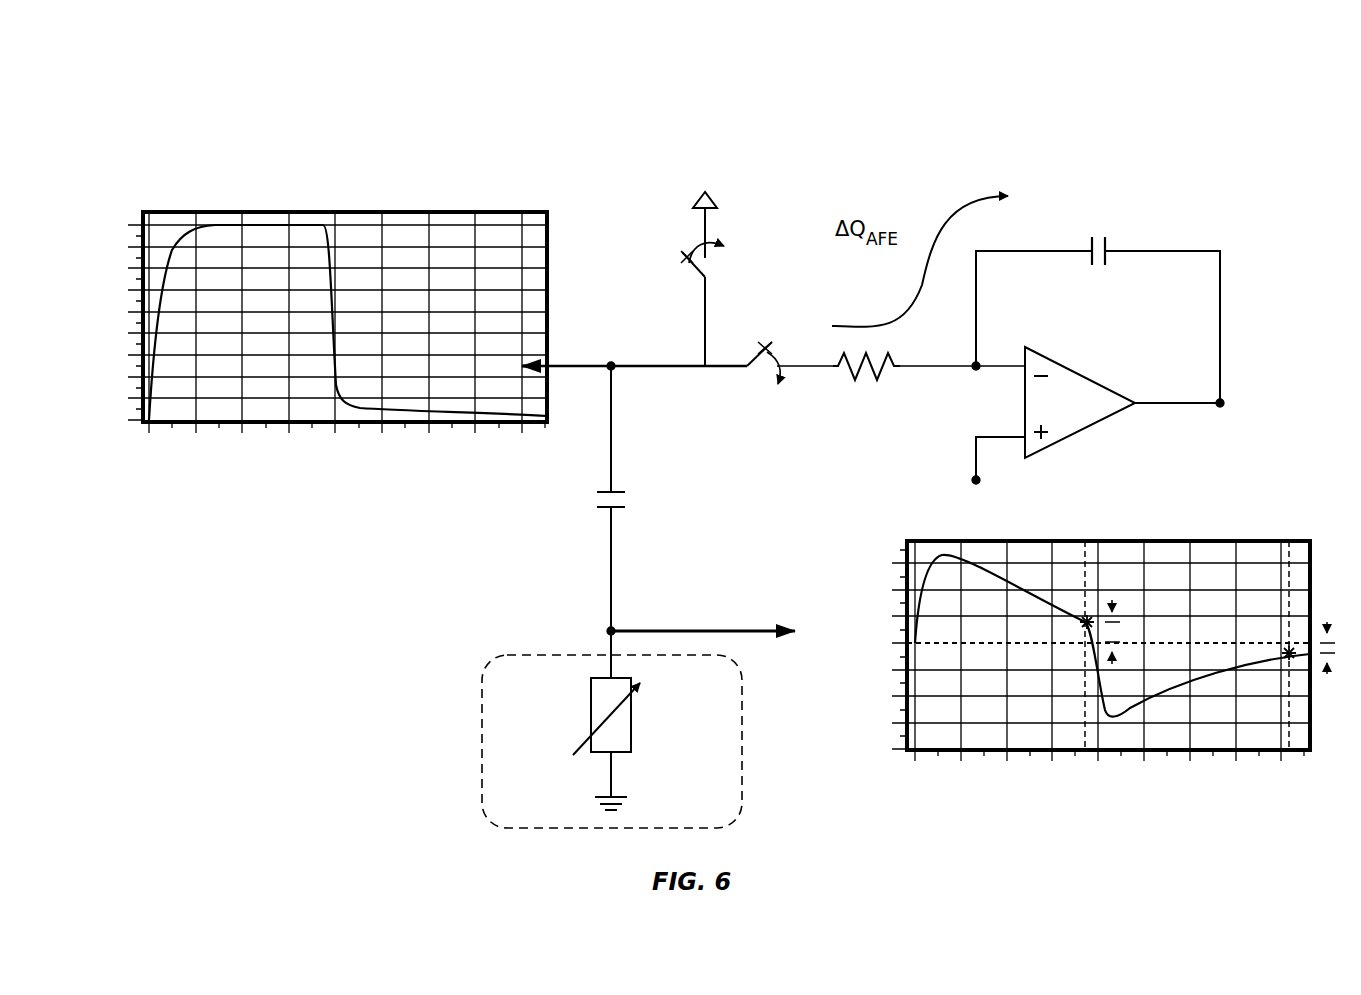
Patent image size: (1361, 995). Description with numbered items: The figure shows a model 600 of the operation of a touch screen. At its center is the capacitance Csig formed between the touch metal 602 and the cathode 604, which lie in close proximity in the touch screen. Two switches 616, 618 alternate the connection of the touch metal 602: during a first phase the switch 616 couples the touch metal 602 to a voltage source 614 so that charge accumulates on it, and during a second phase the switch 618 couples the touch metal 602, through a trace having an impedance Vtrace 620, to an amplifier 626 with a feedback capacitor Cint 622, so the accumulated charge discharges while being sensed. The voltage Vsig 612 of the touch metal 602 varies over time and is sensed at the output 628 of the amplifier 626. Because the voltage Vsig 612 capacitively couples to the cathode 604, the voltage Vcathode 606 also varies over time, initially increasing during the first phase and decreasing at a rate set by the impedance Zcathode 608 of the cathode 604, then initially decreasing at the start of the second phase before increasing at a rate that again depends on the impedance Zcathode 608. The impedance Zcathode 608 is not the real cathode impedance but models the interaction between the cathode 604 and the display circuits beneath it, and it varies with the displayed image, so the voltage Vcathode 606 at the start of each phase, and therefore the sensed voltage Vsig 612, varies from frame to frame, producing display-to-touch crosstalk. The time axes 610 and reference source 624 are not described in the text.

The model 600 is at (272, 80).
The touch metal 602 is at (616, 487).
The cathode 604 is at (615, 512).
The voltage Vcathode 606 is at (685, 605).
The impedance Zcathode 608 is at (540, 735).
The time axis 610 is at (300, 478).
The voltage Vsig 612 is at (615, 332).
The voltage source 614 is at (705, 165).
The switch 616 is at (707, 268).
The switch 618 is at (762, 364).
The trace impedance Vtrace 620 is at (873, 430).
The feedback capacitor Cint 622 is at (1130, 221).
The reference voltage V_REF 624 is at (1078, 503).
The amplifier 626 is at (1053, 415).
The output 628 is at (1272, 390).